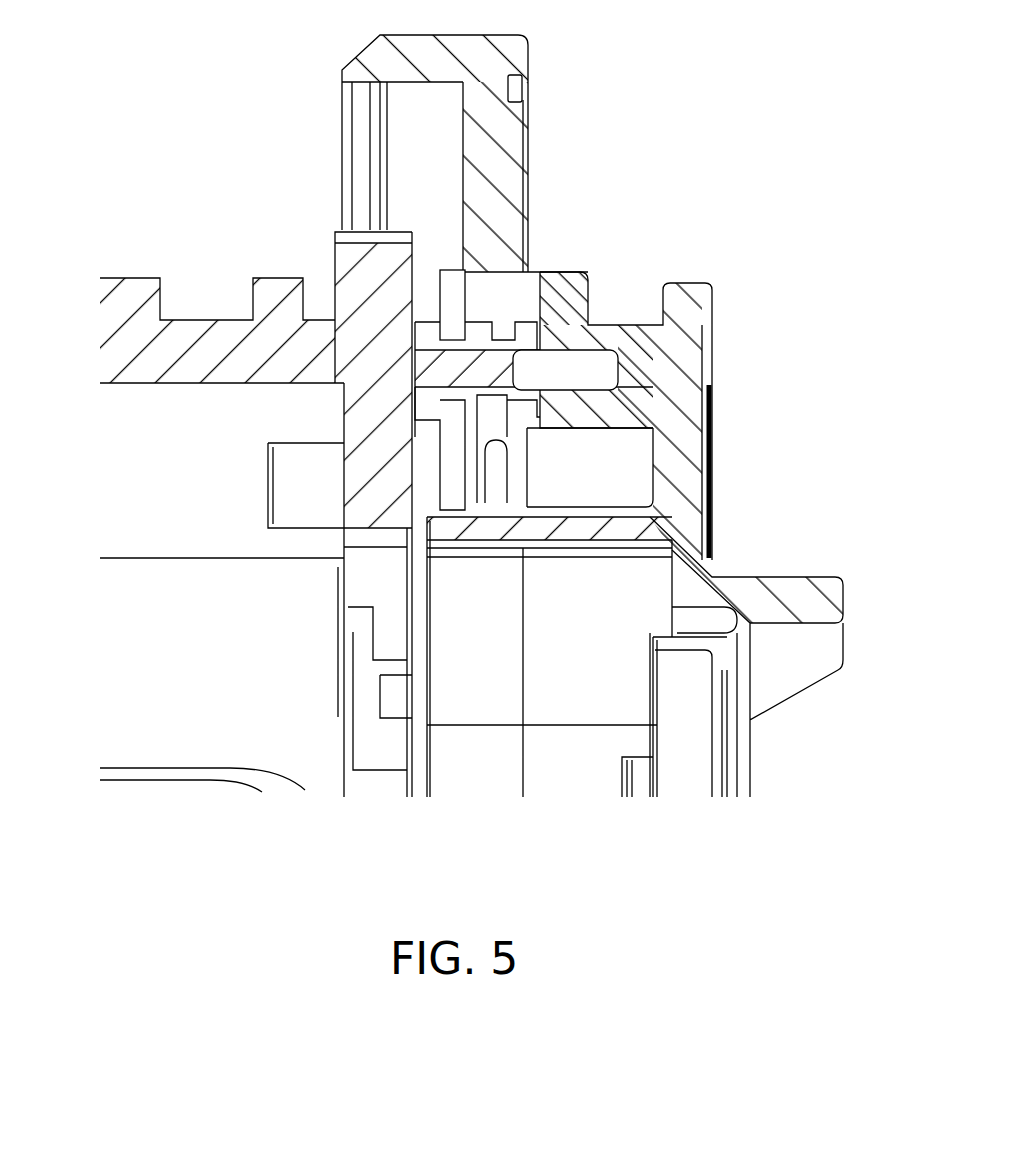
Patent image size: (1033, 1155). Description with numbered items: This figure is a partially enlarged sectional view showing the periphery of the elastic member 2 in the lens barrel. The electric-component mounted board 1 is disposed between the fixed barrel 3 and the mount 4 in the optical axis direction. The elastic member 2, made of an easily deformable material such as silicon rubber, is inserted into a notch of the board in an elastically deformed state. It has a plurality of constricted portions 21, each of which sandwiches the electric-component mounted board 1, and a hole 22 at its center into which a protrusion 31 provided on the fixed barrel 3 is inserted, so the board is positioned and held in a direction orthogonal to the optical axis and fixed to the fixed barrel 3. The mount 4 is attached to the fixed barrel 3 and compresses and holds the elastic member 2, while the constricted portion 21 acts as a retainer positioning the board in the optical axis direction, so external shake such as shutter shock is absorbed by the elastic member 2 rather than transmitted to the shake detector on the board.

The electric-component mounted board 1 is at (452, 287).
The elastic member 2 is at (522, 347).
The constricted portion 21 is at (443, 337).
The hole 22 is at (512, 353).
The fixed barrel 3 is at (135, 292).
The protrusion 31 is at (430, 377).
The mount 4 is at (673, 347).